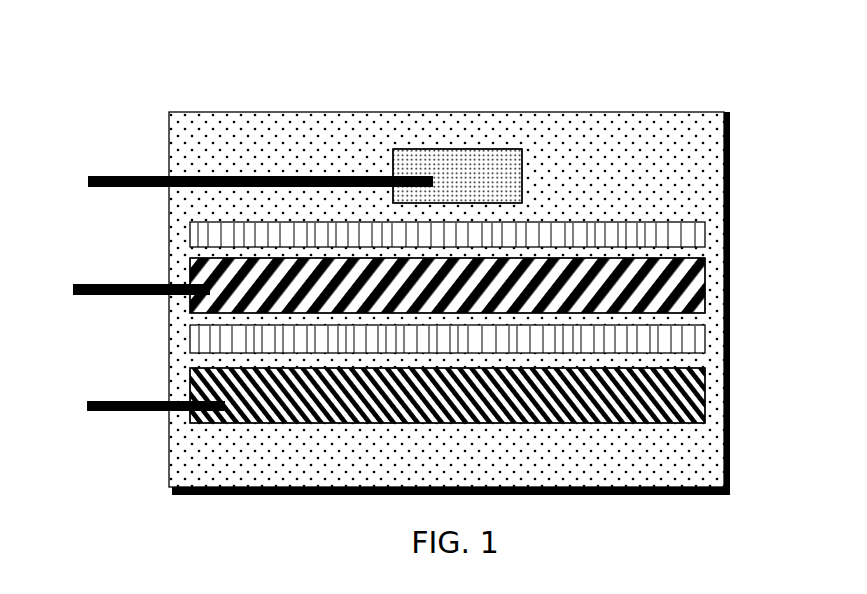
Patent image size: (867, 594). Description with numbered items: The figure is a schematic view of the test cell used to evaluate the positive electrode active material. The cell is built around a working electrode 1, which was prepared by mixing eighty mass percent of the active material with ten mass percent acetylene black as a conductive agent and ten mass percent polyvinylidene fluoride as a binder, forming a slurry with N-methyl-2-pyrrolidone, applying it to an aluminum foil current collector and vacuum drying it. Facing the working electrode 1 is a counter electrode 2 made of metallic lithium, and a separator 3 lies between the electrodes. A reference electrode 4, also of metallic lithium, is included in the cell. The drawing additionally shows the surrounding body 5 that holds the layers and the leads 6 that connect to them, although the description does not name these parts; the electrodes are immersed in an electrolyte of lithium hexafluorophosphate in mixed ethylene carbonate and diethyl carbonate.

The working electrode 1 is at (650, 258).
The counter electrode 2 is at (693, 393).
The separator 3 is at (688, 337).
The reference electrode 4 is at (457, 168).
The casing 5 is at (203, 112).
The lead wires 6 is at (87, 405).